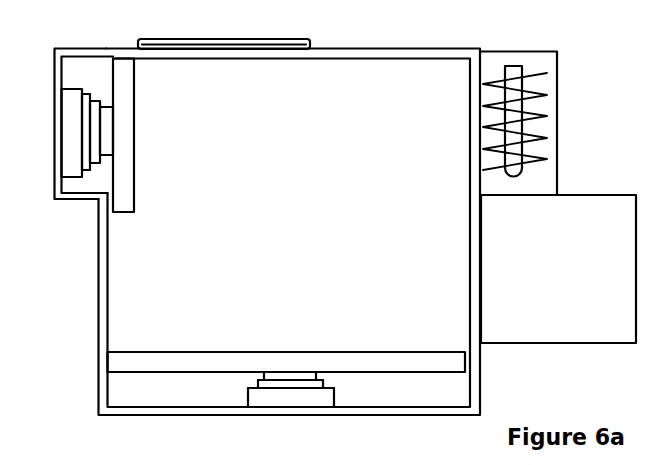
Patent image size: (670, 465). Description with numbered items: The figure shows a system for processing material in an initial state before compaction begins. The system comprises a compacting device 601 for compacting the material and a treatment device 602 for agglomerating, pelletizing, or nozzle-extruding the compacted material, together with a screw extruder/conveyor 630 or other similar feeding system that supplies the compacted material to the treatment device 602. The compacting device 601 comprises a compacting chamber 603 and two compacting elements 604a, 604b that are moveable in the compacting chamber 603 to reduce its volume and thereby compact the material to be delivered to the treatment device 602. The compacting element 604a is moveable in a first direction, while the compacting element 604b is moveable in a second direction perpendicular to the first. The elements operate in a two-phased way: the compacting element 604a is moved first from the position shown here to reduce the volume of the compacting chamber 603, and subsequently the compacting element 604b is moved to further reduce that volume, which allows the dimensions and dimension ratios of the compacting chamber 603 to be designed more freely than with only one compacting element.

The compacting device 601 is at (90, 48).
The treatment device 602 is at (577, 278).
The compacting chamber 603 is at (312, 236).
The compacting element 604a is at (152, 351).
The compacting element 604b is at (135, 182).
The screw extruder/conveyor 630 is at (557, 130).